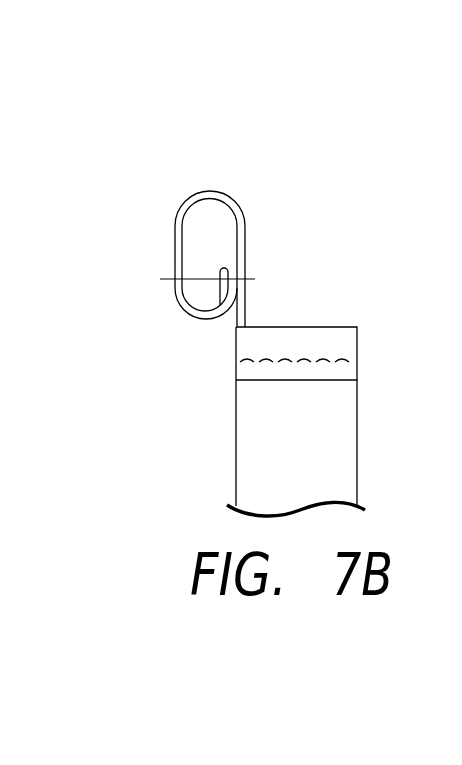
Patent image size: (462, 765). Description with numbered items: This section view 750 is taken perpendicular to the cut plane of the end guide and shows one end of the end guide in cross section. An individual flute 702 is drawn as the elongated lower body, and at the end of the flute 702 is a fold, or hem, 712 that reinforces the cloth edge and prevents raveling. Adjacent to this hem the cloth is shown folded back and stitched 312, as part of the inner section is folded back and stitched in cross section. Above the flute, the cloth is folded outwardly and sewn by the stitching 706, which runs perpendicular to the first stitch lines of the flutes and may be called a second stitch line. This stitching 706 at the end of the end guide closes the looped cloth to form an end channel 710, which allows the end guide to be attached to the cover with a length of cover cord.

The section view 750 is at (296, 208).
The end channel 710 is at (208, 217).
The stitching 706 is at (250, 280).
The fold (hem) 712 is at (338, 347).
The folded back and stitched inner section 312 is at (262, 357).
The flute 702 is at (317, 420).